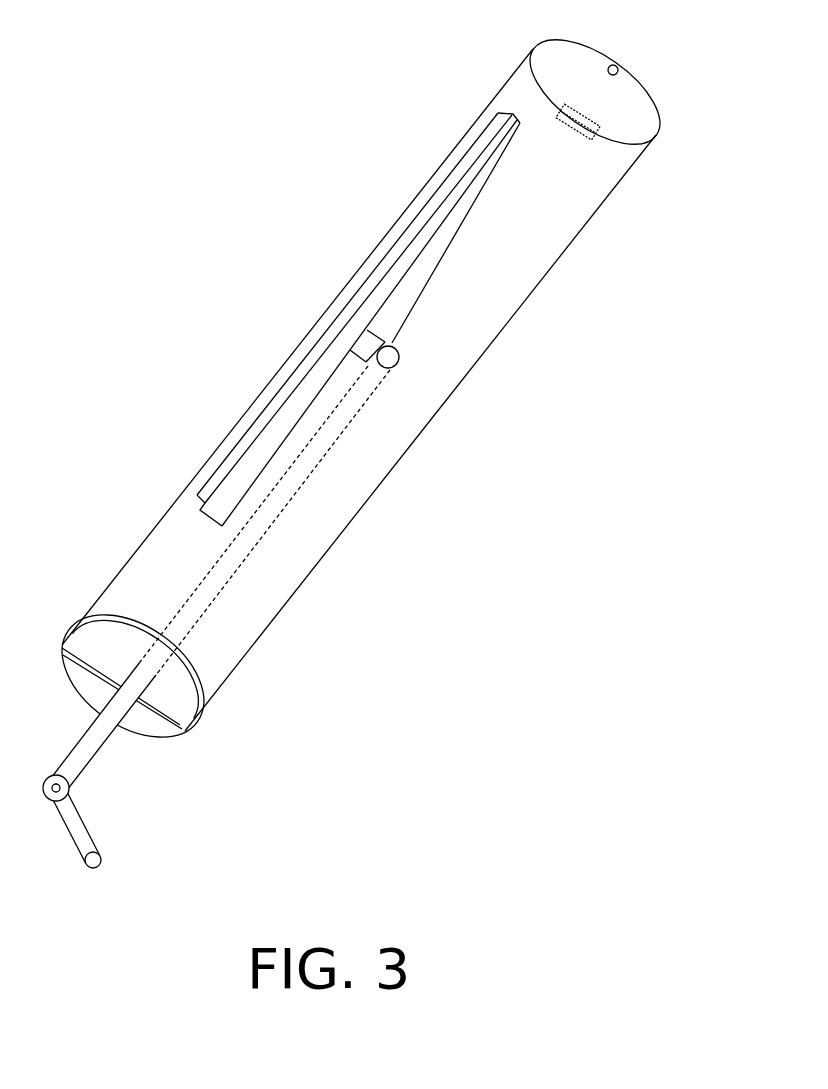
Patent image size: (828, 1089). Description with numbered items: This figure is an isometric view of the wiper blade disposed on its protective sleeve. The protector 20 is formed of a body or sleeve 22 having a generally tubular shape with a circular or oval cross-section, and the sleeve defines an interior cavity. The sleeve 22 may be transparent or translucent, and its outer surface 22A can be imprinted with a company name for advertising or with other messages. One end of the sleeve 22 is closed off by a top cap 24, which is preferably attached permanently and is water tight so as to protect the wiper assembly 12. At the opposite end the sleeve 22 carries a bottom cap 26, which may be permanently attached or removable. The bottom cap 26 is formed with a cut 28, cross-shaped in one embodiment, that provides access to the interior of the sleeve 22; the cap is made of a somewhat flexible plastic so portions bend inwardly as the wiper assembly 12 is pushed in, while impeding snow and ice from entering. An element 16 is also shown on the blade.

The protector 20 is at (384, 443).
The sleeve 22 is at (505, 297).
The outer surface 22A is at (440, 405).
The top cap 24 is at (623, 103).
The flexible strip 16 is at (343, 307).
The bottom cap 26 is at (193, 687).
The cut 28 is at (98, 678).
The wiper assembly 12 is at (102, 753).